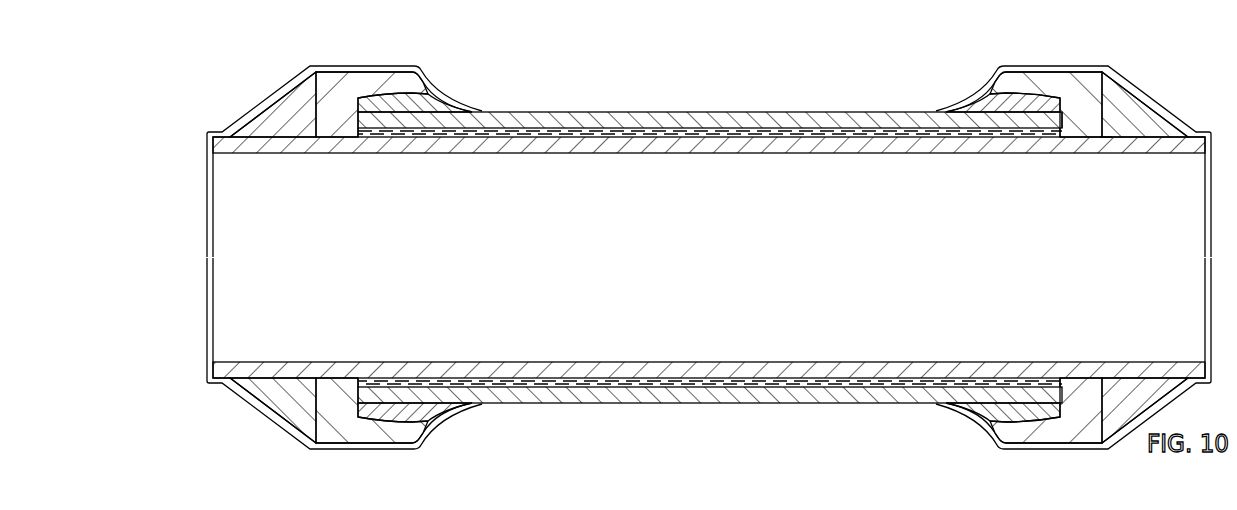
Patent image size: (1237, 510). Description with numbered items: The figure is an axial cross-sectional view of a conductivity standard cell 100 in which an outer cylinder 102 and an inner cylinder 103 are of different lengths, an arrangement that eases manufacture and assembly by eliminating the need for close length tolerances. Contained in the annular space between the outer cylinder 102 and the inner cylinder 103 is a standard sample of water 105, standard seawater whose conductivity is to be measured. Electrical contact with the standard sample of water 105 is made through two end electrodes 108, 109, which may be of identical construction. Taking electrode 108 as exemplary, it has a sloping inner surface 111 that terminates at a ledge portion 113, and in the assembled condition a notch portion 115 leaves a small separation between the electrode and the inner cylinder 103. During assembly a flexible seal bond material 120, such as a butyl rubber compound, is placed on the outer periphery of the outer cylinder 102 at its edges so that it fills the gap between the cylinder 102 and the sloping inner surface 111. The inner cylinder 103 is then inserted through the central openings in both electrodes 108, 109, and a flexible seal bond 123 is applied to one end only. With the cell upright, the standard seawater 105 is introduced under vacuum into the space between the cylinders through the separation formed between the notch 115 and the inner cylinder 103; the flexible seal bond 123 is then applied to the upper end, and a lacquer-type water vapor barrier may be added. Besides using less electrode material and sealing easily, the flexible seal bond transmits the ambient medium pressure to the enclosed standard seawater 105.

The cell 100 is at (690, 91).
The outer cylinder 102 is at (873, 115).
The inner cylinder 103 is at (867, 146).
The standard sample of water 105 is at (792, 131).
The end electrode 108 is at (1087, 80).
The end electrode 109 is at (380, 84).
The sloping inner surface 111 is at (412, 93).
The ledge portion 113 is at (1063, 112).
The notch portion 115 is at (1110, 140).
The flexible seal bond material 120 is at (988, 100).
The flexible seal bond 123 is at (283, 112).